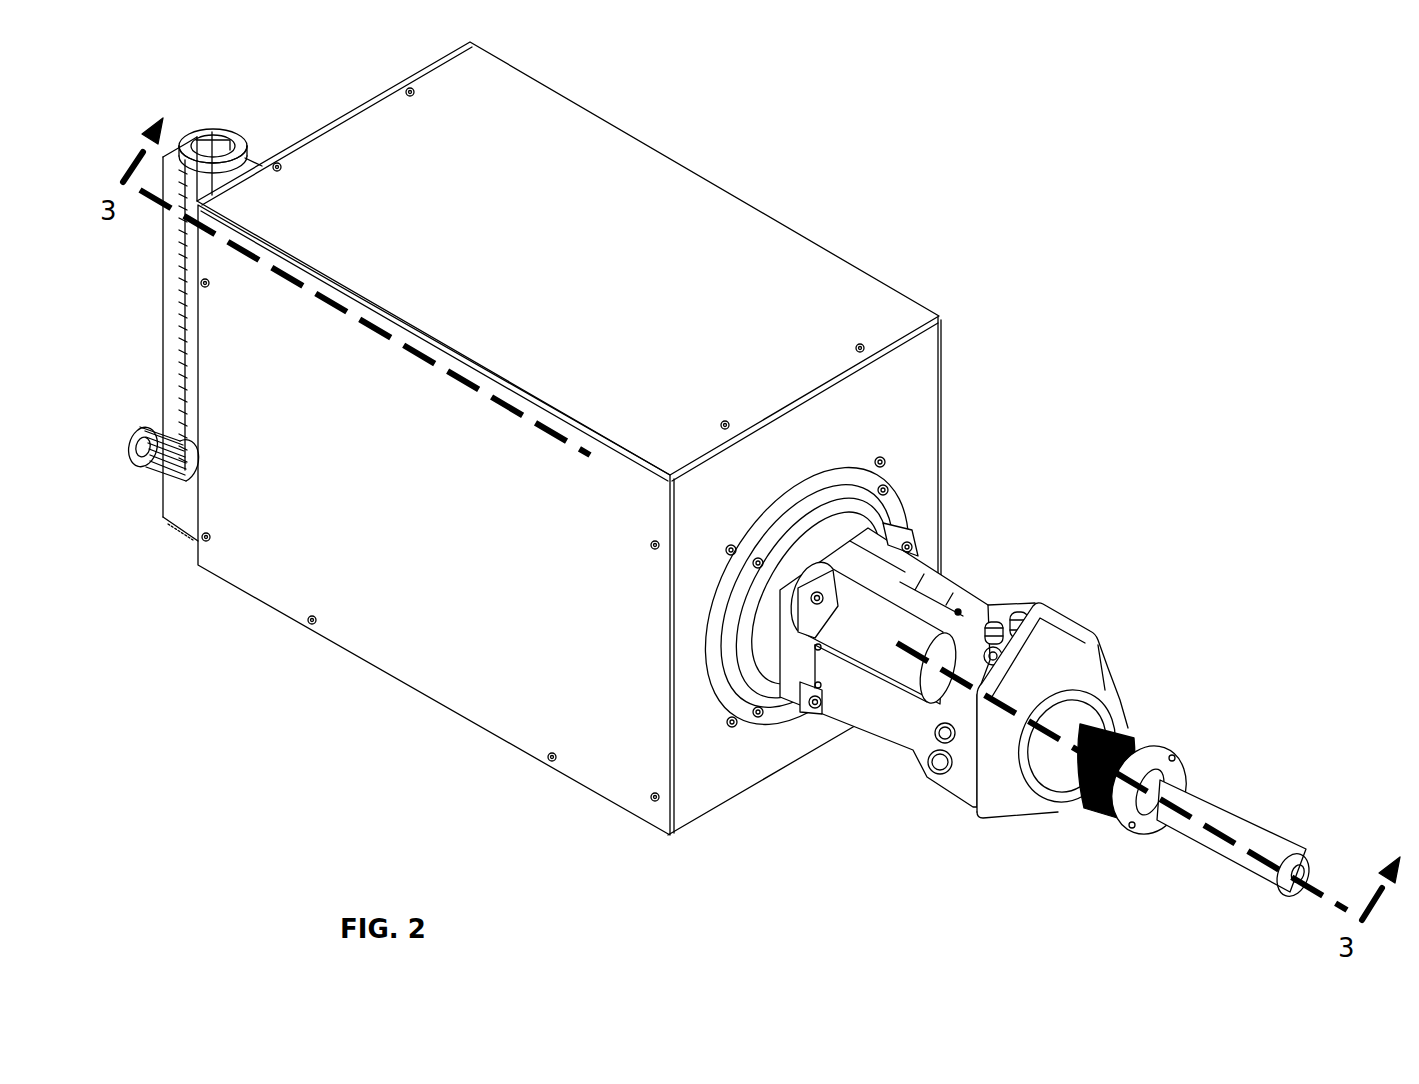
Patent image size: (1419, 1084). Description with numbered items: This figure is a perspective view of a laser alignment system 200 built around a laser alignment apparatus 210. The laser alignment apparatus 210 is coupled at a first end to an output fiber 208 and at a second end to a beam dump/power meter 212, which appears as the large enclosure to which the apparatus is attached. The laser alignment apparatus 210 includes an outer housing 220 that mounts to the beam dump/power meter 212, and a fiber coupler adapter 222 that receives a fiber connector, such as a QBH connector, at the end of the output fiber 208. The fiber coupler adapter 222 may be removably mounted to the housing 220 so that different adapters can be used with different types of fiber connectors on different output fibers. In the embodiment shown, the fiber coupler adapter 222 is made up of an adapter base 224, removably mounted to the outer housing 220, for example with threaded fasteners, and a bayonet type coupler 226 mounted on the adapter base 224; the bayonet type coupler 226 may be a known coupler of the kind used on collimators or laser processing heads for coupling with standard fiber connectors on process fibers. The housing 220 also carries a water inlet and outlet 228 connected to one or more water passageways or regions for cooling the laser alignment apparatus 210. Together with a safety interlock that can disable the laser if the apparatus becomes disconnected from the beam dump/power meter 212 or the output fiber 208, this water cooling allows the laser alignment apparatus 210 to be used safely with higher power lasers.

The laser alignment system 200 is at (1012, 163).
The beam dump/power meter 212 is at (766, 128).
The laser alignment apparatus 210 is at (1114, 570).
The outer housing 220 is at (948, 582).
The water inlet and outlet 228 is at (992, 620).
The adapter base 224 is at (1105, 655).
The fiber coupler adapter 222 is at (1158, 692).
The bayonet type coupler 226 is at (1140, 730).
The output fiber 208 is at (1272, 793).